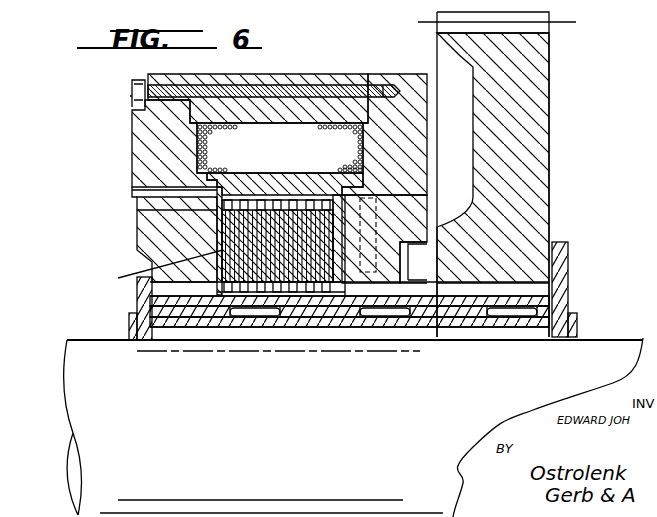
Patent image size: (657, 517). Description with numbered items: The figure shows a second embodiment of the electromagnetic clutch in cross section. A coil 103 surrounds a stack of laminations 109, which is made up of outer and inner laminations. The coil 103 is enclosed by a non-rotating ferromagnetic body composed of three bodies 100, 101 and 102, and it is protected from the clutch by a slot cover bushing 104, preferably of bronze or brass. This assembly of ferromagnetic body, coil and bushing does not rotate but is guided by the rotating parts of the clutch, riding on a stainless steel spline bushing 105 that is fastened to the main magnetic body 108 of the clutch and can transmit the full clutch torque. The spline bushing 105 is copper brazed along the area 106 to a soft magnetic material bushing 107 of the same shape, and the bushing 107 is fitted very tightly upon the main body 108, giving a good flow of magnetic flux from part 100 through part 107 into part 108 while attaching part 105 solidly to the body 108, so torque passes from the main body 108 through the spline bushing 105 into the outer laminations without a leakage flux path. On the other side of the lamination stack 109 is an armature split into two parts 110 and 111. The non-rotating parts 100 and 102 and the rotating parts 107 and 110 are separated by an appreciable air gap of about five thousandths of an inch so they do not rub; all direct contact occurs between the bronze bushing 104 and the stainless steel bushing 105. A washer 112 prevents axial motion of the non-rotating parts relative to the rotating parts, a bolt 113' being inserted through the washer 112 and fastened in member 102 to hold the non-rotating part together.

The ferromagnetic body part 100 is at (170, 110).
The ferromagnetic body part 101 is at (318, 79).
The ferromagnetic body part 102 is at (403, 73).
The coil 103 is at (295, 153).
The slot cover bushing 104 is at (249, 182).
The spline bushing 105 is at (312, 200).
The brazed area 106 is at (223, 250).
The soft magnetic material bushing 107 is at (132, 200).
The main magnetic body of the clutch 108 is at (155, 240).
The stack of laminations 109 is at (338, 284).
The armature part 110 is at (417, 220).
The armature part 111 is at (400, 262).
The washer 112 is at (132, 130).
The bolt 113' is at (115, 93).